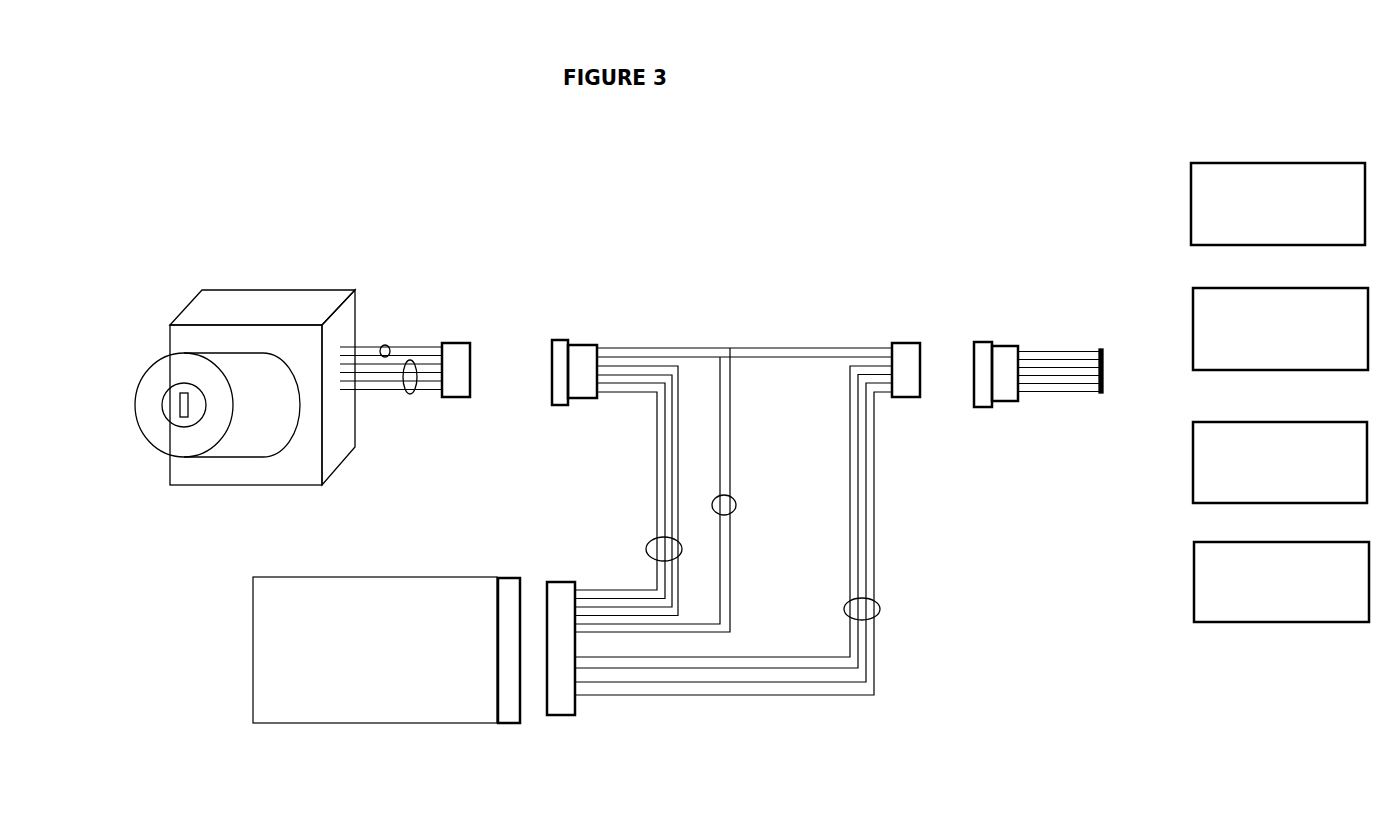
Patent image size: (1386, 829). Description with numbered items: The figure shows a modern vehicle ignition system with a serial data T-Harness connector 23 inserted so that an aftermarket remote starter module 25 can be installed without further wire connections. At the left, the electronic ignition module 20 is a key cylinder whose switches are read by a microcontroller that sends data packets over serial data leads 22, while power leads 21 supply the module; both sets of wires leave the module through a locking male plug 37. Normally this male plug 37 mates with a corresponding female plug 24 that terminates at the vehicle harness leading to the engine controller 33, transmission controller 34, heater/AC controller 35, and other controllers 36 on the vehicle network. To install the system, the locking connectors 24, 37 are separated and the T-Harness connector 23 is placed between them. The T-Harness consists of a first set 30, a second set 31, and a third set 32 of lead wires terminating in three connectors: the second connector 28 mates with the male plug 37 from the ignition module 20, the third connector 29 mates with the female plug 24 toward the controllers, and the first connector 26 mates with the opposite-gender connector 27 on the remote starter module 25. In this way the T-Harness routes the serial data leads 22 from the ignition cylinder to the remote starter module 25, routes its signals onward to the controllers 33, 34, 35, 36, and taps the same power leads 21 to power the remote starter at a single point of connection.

The electronic ignition module 20 is at (140, 358).
The power leads 21 is at (385, 345).
The serial data leads 22 is at (410, 394).
The serial data T-Harness connector 23 is at (727, 338).
The female plug 24 is at (997, 340).
The remote starter module 25 is at (375, 650).
The first connector 26 is at (563, 722).
The opposite gender connector 27 is at (517, 727).
The second connector 28 is at (547, 375).
The third connector 29 is at (908, 402).
The first set of lead wires 30 is at (736, 503).
The second set of lead wires 31 is at (648, 546).
The third set of lead wires 32 is at (880, 607).
The engine controller 33 is at (1318, 158).
The transmission controller 34 is at (1322, 287).
The heater/AC controller 35 is at (1318, 418).
The other controllers 36 is at (1318, 540).
The male plug 37 is at (460, 340).